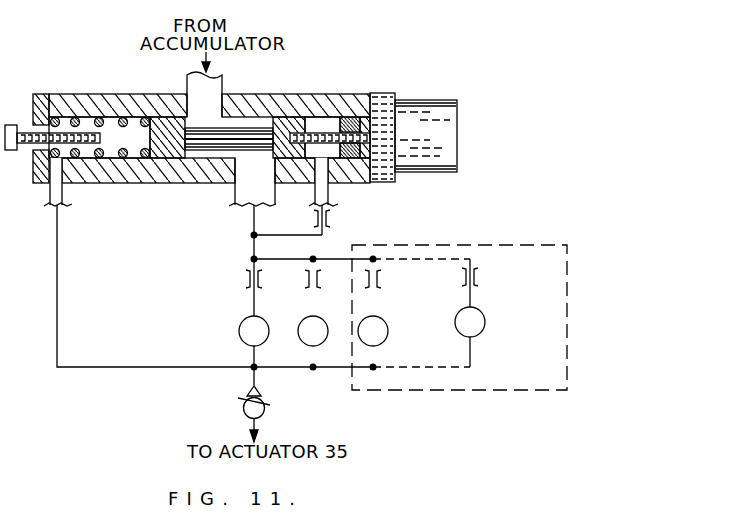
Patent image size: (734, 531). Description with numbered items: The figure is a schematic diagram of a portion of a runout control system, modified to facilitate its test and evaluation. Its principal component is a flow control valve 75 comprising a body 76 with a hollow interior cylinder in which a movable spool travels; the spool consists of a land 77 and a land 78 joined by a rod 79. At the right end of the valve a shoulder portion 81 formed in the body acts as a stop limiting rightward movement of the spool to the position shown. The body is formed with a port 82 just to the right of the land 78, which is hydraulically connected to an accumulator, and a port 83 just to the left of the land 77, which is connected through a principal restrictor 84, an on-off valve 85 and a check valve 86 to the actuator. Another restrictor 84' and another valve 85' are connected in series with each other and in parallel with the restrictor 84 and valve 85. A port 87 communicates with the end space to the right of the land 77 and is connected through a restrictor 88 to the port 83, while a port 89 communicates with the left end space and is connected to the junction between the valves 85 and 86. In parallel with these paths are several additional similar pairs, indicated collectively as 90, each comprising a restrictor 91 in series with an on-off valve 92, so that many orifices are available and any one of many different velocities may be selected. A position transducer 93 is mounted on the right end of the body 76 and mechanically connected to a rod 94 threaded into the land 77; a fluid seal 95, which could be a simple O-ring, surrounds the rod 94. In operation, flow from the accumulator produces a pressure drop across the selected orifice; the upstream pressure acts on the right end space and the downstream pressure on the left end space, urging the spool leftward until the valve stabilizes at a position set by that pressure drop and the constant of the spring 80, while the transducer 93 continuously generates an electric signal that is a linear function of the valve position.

The flow control valve 75 is at (155, 211).
The body 76 is at (37, 100).
The land 78 is at (165, 120).
The rod 79 is at (240, 110).
The spring 80 is at (73, 99).
The shoulder portion 81 is at (318, 128).
The port 82 is at (222, 82).
The port 83 is at (236, 192).
The principal restrictor 84 is at (238, 274).
The restrictor 84' is at (295, 274).
The on-off valve 85 is at (238, 328).
The valve 85' is at (302, 328).
The check valve 86 is at (246, 401).
The port 87 is at (329, 188).
The restrictor 88 is at (335, 220).
The port 89 is at (65, 195).
The additional similar pairs 90 is at (507, 245).
The restrictor 91 is at (384, 283).
The on-off valve 92 is at (388, 336).
The position transducer 93 is at (457, 113).
The rod 94 is at (338, 128).
The fluid seal 95 is at (372, 99).
The land 77 is at (286, 115).